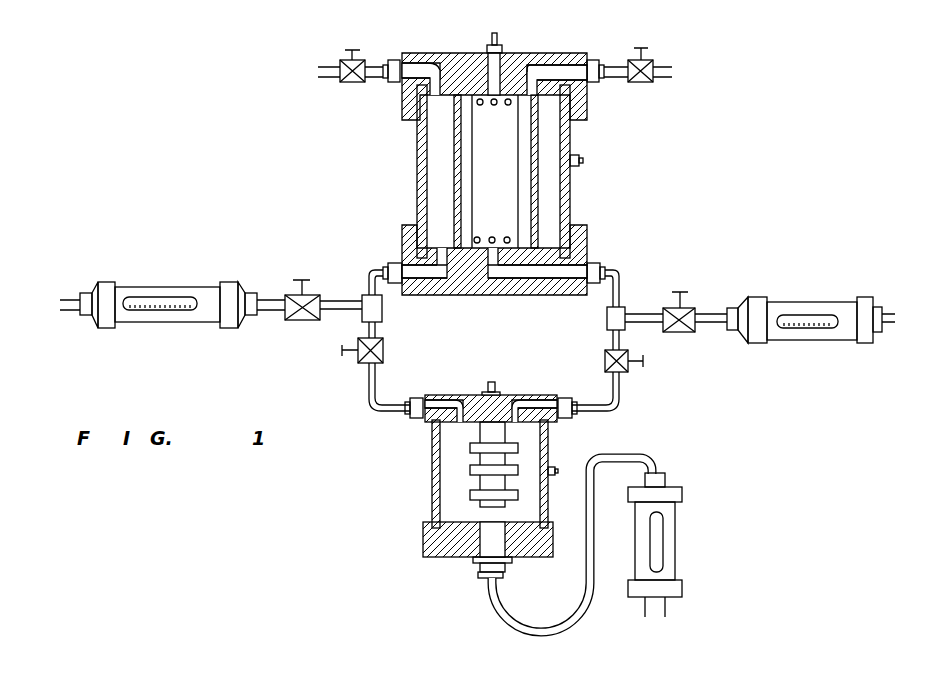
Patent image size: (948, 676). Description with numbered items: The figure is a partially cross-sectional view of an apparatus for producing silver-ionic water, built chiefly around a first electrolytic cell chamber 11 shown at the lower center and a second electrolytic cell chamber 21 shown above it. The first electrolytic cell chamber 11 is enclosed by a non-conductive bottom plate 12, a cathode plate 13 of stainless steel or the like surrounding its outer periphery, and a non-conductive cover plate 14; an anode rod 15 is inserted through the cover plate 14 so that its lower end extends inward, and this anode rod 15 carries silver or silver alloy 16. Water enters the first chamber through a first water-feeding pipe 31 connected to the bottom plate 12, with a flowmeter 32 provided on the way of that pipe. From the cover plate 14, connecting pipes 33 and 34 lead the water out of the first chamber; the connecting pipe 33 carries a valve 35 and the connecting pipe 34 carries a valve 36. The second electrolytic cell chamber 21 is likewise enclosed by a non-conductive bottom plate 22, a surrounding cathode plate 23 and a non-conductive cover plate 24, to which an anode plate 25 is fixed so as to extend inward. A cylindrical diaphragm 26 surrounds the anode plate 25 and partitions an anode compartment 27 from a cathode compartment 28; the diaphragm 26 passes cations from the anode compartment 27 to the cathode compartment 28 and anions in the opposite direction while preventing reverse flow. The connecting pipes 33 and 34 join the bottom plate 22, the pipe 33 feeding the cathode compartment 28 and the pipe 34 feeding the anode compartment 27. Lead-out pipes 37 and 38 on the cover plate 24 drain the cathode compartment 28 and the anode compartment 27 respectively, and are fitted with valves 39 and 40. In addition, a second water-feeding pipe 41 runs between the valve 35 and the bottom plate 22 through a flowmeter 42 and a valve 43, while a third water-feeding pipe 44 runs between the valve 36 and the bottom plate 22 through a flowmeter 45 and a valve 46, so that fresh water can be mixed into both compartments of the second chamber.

The first electrolytic cell chamber 11 is at (476, 476).
The bottom plate 12 is at (440, 558).
The cathode plate 13 is at (549, 447).
The cover plate 14 is at (461, 395).
The anode rod 15 is at (488, 480).
The silver or silver alloy 16 is at (475, 495).
The second electrolytic cell chamber 21 is at (505, 172).
The bottom plate 22 is at (474, 295).
The cathode plate 23 is at (572, 144).
The cover plate 24 is at (451, 53).
The anode plate 25 is at (510, 188).
The cylindrical diaphragm 26 is at (540, 216).
The anode compartment 27 is at (466, 203).
The cathode compartment 28 is at (420, 141).
The first water-feeding pipe 31 is at (667, 609).
The flowmeter 32 is at (682, 523).
The connecting pipe 33 is at (381, 268).
The connecting pipe 34 is at (618, 268).
The valve 35 is at (362, 360).
The valve 36 is at (629, 370).
The lead-out pipe 37 is at (392, 61).
The lead-out pipe 38 is at (616, 65).
The valve 39 is at (348, 60).
The valve 40 is at (655, 60).
The second water-feeding pipe 41 is at (76, 297).
The flowmeter 42 is at (168, 287).
The valve 43 is at (303, 320).
The third water-feeding pipe 44 is at (652, 314).
The flowmeter 45 is at (818, 302).
The valve 46 is at (685, 332).